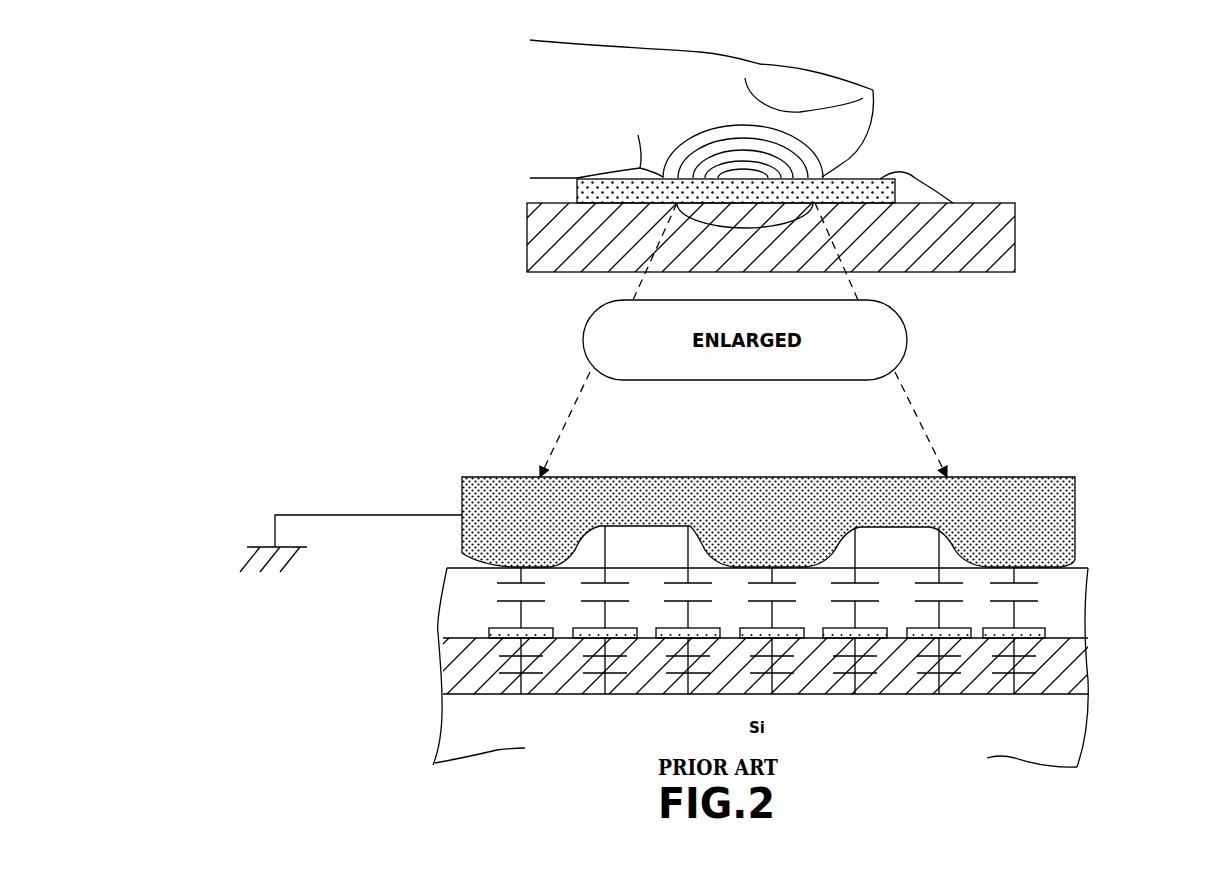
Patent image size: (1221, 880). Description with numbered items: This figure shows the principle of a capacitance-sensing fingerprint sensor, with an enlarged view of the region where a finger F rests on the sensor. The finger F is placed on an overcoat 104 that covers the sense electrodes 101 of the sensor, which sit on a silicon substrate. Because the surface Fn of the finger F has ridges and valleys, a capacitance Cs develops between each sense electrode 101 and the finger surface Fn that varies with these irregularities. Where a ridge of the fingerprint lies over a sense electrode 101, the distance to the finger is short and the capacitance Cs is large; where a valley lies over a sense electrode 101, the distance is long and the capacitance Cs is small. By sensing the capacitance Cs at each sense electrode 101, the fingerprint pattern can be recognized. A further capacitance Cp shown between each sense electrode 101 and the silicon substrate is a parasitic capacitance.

The finger F is at (675, 60).
The sense electrode 101 is at (862, 183).
The overcoat 104 is at (1073, 618).
The surface of the finger Fn is at (1075, 574).
The capacitance Cs is at (488, 597).
The parasitic capacitance Cp is at (488, 665).